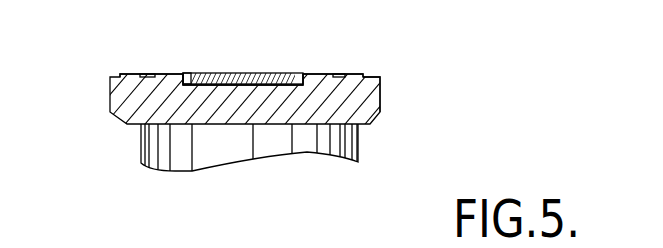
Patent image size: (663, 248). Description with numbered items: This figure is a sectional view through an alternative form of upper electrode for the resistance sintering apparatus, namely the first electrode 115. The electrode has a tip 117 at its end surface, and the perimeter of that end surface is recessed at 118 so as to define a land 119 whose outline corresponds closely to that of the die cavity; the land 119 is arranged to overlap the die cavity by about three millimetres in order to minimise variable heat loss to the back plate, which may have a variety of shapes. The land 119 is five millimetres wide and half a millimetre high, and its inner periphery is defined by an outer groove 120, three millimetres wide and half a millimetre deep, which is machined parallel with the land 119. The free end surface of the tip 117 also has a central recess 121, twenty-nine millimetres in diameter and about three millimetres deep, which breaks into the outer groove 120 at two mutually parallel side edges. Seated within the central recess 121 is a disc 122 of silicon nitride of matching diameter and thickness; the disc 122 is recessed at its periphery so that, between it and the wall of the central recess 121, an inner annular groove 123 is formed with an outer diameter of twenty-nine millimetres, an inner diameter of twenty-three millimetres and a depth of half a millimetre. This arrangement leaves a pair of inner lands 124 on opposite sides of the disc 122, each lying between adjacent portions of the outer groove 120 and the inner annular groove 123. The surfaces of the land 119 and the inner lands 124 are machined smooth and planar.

The first electrode 115 is at (138, 136).
The tip 117 is at (365, 97).
The recess 118 is at (377, 76).
The land 119 is at (132, 73).
The outer groove 120 is at (347, 73).
The central recess 121 is at (195, 86).
The disc 122 is at (279, 75).
The inner annular groove 123 is at (189, 75).
The inner lands 124 is at (165, 75).